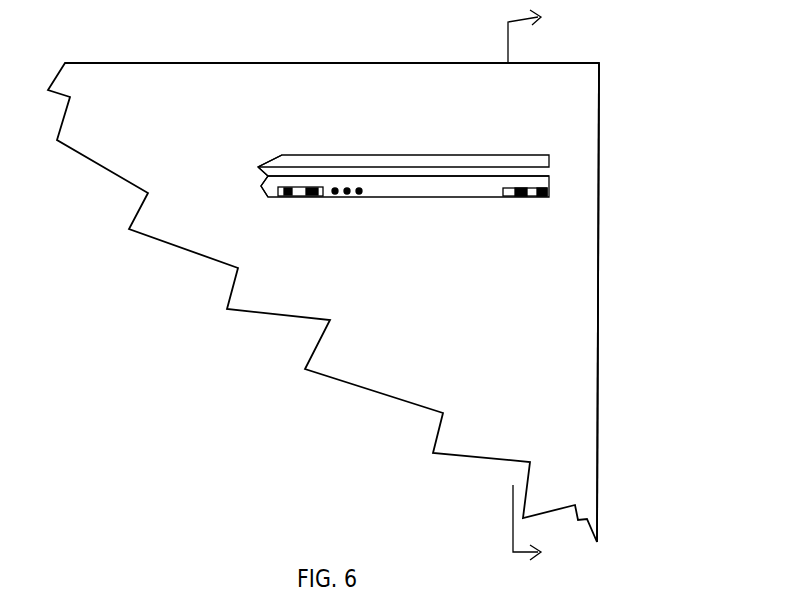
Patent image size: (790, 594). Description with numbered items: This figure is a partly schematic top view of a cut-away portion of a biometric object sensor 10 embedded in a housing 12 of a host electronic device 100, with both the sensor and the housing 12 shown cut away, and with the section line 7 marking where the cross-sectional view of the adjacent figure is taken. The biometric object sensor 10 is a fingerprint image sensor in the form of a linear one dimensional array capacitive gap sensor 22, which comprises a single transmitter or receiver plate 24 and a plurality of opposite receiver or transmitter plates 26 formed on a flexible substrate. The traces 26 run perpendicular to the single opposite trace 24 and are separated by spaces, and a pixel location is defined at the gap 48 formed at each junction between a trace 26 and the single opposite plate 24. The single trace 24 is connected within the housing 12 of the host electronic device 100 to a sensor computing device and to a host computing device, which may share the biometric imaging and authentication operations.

The section line 7- 7 is at (550, 288).
The biometric object sensor 10 is at (384, 160).
The housing 12 is at (597, 362).
The linear one dimensional array capacitive gap sensor 22 is at (332, 165).
The transmitter or receiver plate 24 is at (530, 157).
The receiver or transmitter plates 26 is at (305, 206).
The gap 48 is at (253, 179).
The host electronic device 100 is at (617, 262).